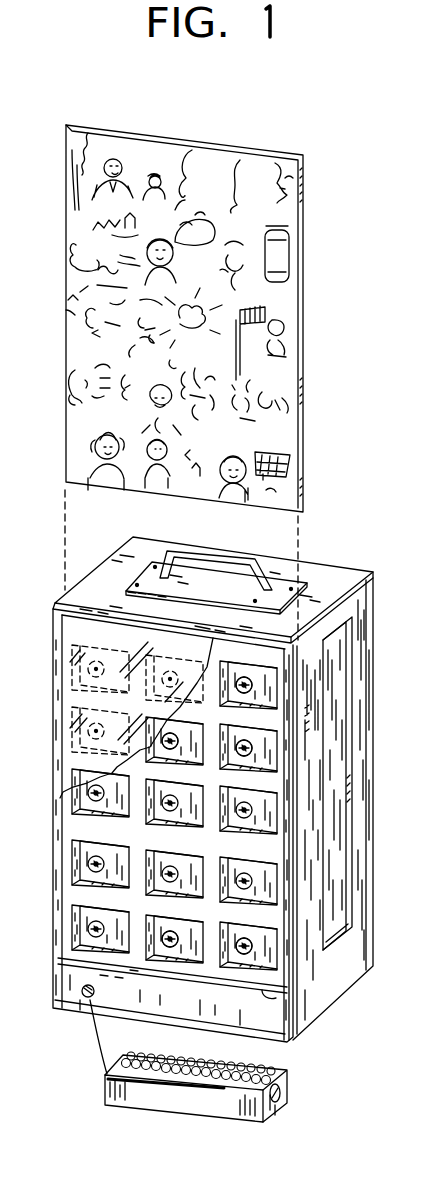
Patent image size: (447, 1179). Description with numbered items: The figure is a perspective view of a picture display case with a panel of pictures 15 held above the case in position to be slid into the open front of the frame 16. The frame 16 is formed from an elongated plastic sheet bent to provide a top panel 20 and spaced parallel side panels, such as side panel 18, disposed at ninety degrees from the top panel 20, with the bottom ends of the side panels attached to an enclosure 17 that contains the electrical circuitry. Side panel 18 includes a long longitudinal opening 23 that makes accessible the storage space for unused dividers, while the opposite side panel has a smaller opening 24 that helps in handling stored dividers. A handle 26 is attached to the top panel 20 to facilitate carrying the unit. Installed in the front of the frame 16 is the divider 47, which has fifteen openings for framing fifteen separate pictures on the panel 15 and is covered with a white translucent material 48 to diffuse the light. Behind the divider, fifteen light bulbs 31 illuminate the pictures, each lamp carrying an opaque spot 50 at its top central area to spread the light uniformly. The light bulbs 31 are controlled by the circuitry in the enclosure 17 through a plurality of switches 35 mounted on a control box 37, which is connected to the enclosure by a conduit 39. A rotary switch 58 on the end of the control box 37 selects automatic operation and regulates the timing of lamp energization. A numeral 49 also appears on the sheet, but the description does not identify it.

The panel of pictures 15 is at (270, 163).
The frame 16 is at (247, 789).
The enclosure 17 is at (267, 1033).
The side panel 18 is at (360, 945).
The top panel 20 is at (330, 578).
The longitudinal opening 23 is at (340, 760).
The opening 24 is at (278, 998).
The handle 26 is at (240, 524).
The light bulbs 31 is at (257, 685).
The switches 35 is at (227, 1084).
The control box 37 is at (228, 1102).
The conduit 39 is at (90, 1043).
The divider 47 is at (240, 650).
The white translucent material 48 is at (88, 630).
The rear panel 49 is at (435, 193).
The opaque spot 50 is at (257, 881).
The rotary switch 58 is at (290, 1088).